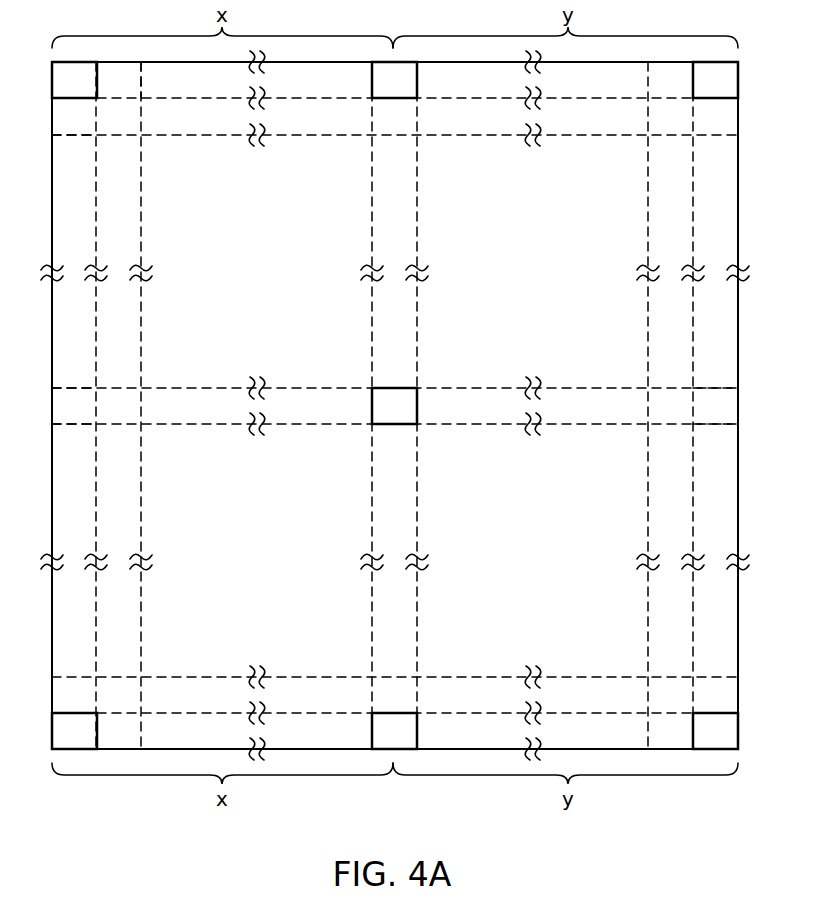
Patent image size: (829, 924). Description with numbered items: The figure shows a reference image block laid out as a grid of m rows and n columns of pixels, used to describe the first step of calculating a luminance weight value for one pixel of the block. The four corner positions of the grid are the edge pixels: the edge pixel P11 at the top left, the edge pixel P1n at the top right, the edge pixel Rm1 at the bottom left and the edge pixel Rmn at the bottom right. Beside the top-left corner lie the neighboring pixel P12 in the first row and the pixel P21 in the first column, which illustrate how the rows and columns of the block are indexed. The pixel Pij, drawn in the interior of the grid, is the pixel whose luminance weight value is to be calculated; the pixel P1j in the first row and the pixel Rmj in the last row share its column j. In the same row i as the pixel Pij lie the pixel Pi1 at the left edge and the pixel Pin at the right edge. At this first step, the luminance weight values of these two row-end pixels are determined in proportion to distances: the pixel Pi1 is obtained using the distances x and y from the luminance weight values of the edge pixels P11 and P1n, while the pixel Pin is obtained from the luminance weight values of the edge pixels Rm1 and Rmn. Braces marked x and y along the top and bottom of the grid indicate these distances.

The edge pixel P11 is at (74, 81).
The pixel P12 is at (119, 81).
The pixel P21 is at (74, 116).
The pixel P1j is at (394, 81).
The edge pixel P1n is at (715, 81).
The pixel Pi1 is at (74, 406).
The pixel Pij is at (394, 406).
The pixel Pin is at (715, 406).
The edge pixel Rm1 is at (74, 731).
The pixel Rmj is at (394, 731).
The edge pixel Rmn is at (715, 731).